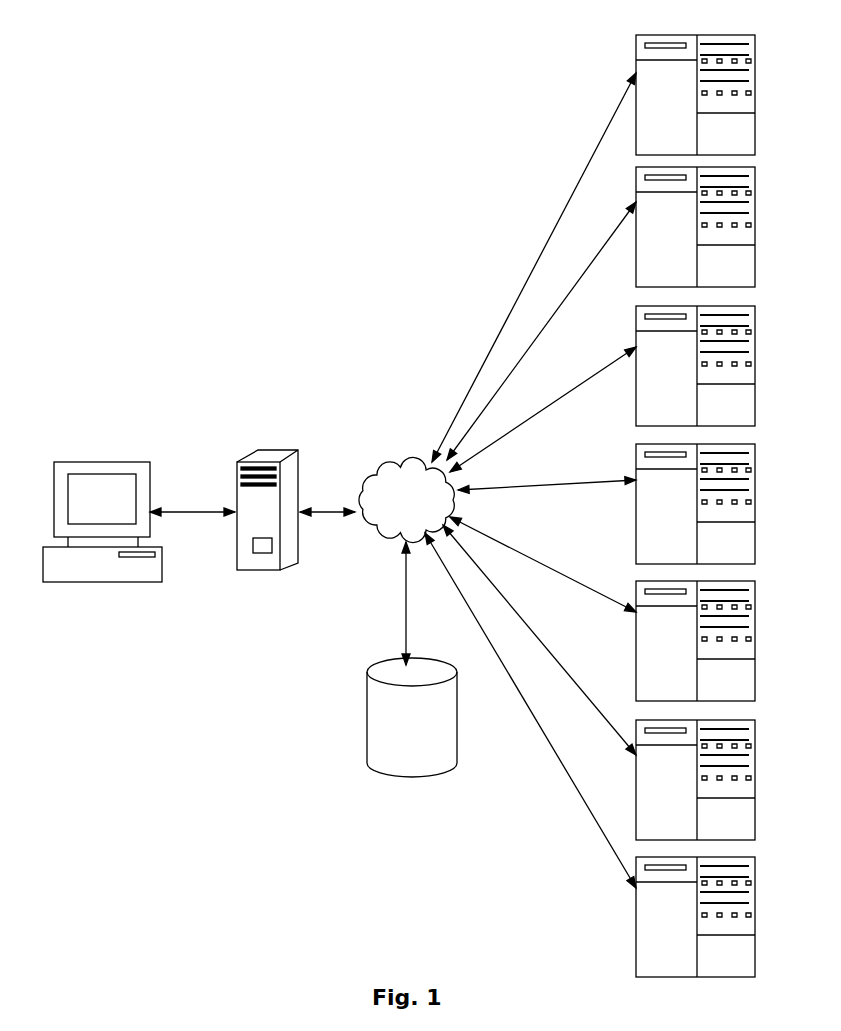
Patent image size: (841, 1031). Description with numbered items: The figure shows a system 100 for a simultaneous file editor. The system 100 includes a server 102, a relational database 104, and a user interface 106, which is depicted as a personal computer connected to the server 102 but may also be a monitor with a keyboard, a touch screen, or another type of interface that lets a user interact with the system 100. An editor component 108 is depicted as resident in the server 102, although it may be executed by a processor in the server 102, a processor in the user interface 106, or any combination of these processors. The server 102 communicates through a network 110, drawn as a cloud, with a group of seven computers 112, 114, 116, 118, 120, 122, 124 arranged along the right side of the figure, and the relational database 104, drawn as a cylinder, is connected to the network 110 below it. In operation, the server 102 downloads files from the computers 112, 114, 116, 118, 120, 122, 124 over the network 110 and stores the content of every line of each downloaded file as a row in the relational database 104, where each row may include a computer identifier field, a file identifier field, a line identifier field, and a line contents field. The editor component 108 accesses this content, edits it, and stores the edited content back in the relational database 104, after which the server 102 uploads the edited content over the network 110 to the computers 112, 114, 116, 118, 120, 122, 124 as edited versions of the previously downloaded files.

The system 100 is at (386, 155).
The server 102 is at (243, 460).
The relational database 104 is at (366, 742).
The user interface 106 is at (162, 567).
The editor component 108 is at (268, 545).
The network 110 is at (384, 466).
The computer 112 is at (750, 30).
The computer 114 is at (721, 227).
The computer 116 is at (721, 366).
The computer 118 is at (721, 504).
The computer 120 is at (721, 641).
The computer 122 is at (721, 780).
The computer 124 is at (721, 917).